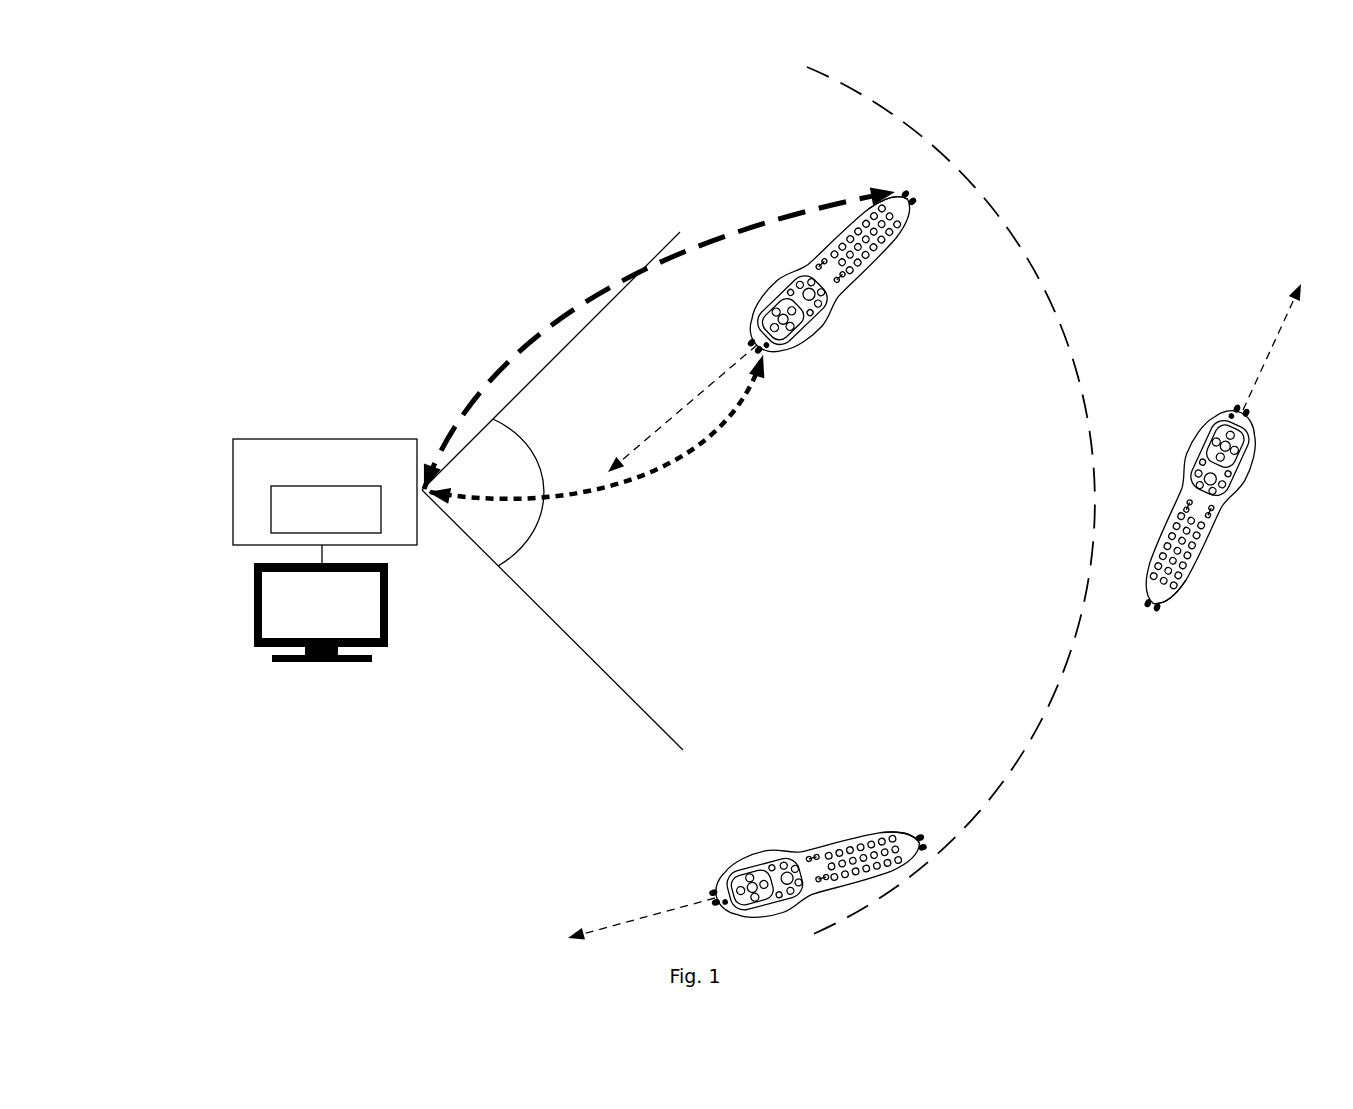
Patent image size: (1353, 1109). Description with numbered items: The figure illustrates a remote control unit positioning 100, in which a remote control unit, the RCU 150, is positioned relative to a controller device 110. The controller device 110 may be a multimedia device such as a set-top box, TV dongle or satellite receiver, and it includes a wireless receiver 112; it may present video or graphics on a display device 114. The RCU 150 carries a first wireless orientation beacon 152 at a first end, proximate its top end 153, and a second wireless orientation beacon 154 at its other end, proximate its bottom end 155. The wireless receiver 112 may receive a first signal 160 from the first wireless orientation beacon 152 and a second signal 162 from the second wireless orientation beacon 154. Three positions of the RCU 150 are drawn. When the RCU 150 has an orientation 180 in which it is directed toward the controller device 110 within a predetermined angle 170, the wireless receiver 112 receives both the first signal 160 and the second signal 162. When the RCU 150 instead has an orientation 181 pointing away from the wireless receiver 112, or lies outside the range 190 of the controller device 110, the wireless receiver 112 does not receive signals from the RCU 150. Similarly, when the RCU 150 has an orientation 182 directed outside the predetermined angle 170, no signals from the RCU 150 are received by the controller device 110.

The remote control unit positioning 100 is at (150, 122).
The controller device 110 is at (300, 468).
The wireless receiver 112 is at (272, 508).
The display device 114 is at (255, 621).
The remote control unit 150 is at (973, 540).
The first wireless orientation beacon 152 is at (755, 347).
The top end 153 is at (755, 328).
The second wireless orientation beacon 154 is at (908, 196).
The bottom end 155 is at (913, 212).
The first signal 160 is at (753, 393).
The second signal 162 is at (767, 220).
The predetermined angle 170 is at (567, 537).
The orientation 180 is at (675, 422).
The orientation 181 is at (1267, 358).
The orientation 182 is at (638, 917).
The range 190 is at (1043, 278).